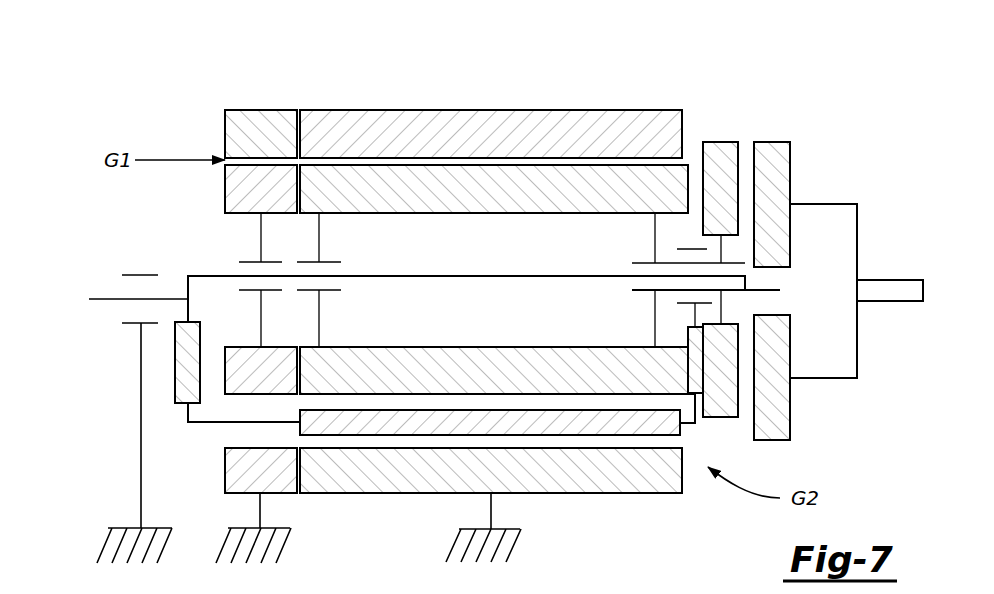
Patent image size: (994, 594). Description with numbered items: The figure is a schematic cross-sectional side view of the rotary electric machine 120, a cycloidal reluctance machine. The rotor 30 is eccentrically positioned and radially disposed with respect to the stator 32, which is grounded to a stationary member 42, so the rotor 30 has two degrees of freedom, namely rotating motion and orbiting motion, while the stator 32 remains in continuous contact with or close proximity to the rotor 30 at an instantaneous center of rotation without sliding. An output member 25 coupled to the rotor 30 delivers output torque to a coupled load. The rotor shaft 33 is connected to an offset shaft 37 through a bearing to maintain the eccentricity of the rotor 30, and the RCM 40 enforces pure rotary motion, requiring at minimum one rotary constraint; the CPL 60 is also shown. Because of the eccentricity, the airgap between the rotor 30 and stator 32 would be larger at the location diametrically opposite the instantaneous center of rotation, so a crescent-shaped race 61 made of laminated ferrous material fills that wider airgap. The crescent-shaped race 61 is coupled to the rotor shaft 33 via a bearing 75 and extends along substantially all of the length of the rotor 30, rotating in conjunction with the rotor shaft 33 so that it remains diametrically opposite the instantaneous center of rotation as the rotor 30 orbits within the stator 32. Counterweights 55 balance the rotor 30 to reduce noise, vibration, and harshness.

The rotary electric machine 120 is at (857, 80).
The output member 25 is at (895, 280).
The rotor 30 is at (528, 213).
The stator 32 is at (605, 110).
The rotor shaft 33 is at (210, 276).
The offset shaft 37 is at (141, 417).
The RCM 40 is at (297, 102).
The stationary member 42 is at (103, 545).
The counterweights 55 is at (181, 405).
The CPL 60 is at (703, 135).
The crescent-shaped race 61 is at (680, 430).
The bearing 75 is at (693, 243).